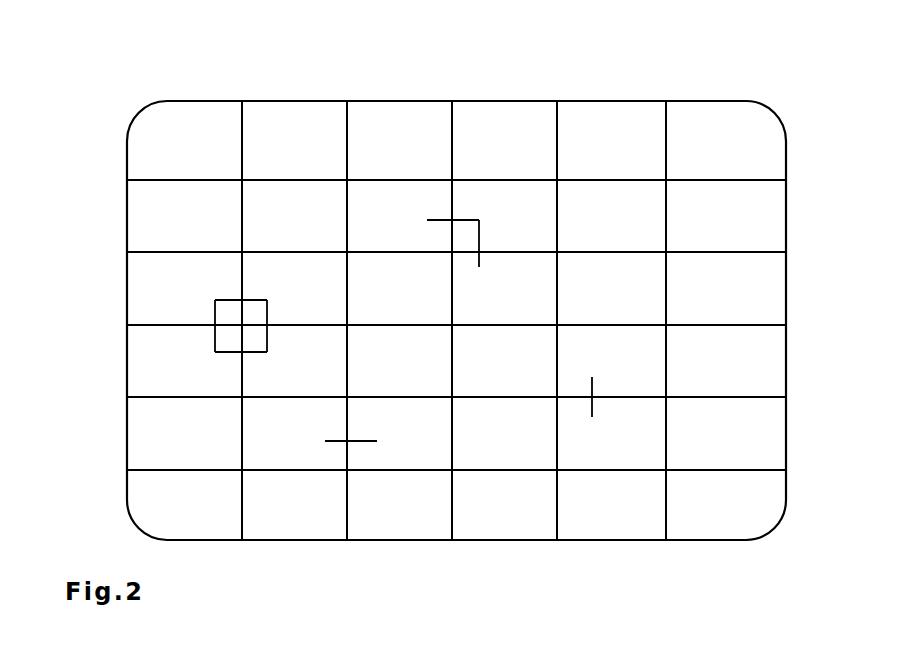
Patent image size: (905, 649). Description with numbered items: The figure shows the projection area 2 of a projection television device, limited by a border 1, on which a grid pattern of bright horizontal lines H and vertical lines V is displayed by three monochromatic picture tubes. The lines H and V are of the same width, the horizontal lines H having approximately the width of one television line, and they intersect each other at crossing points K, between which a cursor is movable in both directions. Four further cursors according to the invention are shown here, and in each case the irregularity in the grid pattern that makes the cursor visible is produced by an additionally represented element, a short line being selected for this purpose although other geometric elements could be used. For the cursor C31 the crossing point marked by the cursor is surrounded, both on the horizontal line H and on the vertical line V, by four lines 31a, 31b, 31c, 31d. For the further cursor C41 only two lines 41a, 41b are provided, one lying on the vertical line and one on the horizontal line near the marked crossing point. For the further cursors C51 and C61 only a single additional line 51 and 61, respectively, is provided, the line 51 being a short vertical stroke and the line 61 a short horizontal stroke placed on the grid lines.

The border 1 is at (130, 128).
The projection area 2 is at (598, 78).
The vertical lines V is at (347, 135).
The crossing points K is at (452, 180).
The horizontal lines H is at (148, 253).
The line 31a is at (268, 338).
The line 31b is at (227, 299).
The line 31c is at (215, 338).
The line 31d is at (228, 353).
The cursor C31 is at (252, 315).
The line 41a is at (480, 265).
The line 41b is at (467, 217).
The cursor C41 is at (448, 257).
The additional line 51 is at (593, 388).
The cursor C51 is at (552, 395).
The additional line 61 is at (367, 440).
The cursor C61 is at (355, 477).